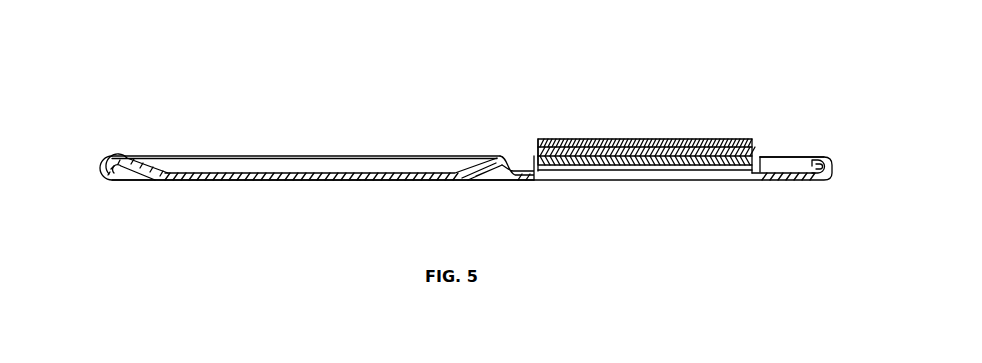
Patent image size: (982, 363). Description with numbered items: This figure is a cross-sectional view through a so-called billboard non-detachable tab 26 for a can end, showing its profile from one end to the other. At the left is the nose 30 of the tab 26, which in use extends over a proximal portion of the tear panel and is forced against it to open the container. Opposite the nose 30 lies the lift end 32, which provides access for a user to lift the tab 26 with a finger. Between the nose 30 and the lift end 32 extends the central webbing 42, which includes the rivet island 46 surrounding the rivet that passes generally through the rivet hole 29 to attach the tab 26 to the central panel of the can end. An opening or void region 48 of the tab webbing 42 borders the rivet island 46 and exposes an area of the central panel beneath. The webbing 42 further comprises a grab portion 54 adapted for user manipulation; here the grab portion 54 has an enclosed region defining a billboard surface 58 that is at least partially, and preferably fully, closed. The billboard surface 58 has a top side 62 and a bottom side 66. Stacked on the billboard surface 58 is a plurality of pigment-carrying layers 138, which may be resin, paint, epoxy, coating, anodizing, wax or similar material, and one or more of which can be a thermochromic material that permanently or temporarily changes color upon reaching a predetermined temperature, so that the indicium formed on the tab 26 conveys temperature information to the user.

The tab 26 is at (147, 92).
The nose 30 is at (100, 160).
The rivet island 46 is at (190, 157).
The central webbing 42 is at (380, 172).
The rivet hole 29 is at (313, 181).
The void region 48 is at (428, 181).
The billboard surface 58 is at (510, 172).
The pigment-carrying layer 138 is at (653, 140).
The top side 62 is at (780, 172).
The grab portion 54 is at (805, 158).
The bottom side 66 is at (783, 182).
The lift end 32 is at (833, 172).